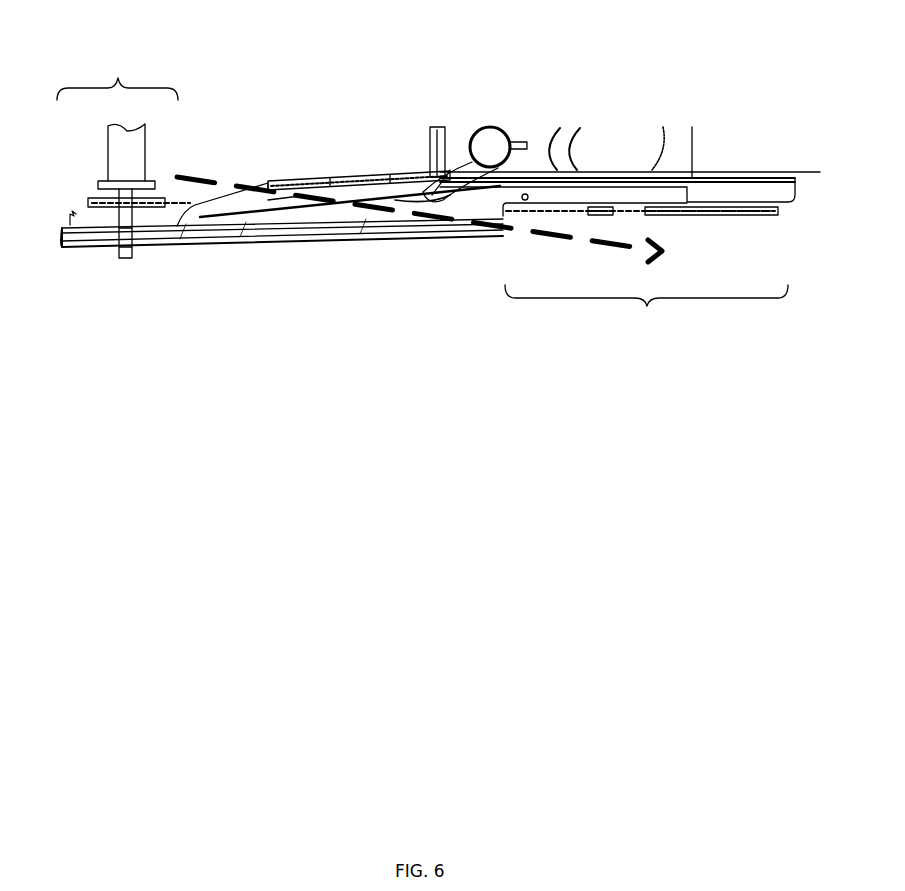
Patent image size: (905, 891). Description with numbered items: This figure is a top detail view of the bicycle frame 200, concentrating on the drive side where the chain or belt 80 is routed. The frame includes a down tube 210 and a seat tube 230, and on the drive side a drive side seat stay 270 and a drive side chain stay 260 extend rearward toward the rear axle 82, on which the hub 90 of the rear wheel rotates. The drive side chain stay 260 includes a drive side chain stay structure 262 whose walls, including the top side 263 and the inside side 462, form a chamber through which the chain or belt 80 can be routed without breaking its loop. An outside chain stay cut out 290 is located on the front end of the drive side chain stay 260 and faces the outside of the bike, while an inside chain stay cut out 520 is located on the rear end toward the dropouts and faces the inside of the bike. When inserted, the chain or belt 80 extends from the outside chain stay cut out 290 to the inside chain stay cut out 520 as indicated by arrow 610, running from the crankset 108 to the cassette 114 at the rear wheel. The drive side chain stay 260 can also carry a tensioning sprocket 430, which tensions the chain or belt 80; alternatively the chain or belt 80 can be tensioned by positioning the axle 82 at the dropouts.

The inside chain stay cut out 520 is at (118, 78).
The hub 90 is at (125, 152).
The cassette 114 is at (97, 197).
The axle 82 is at (128, 252).
The chain or belt 80 is at (172, 202).
The drive side chain stay structure 262 is at (270, 277).
The drive side chain stay 260 is at (347, 233).
The top side 263 is at (362, 241).
The drive side seat stay 270 is at (288, 243).
The inside side 462 is at (322, 178).
The down tube 210 is at (725, 142).
The seat tube 230 is at (598, 140).
The bicycle frame 200 is at (548, 82).
The arrow 610 is at (638, 250).
The outside chain stay cut out 290 is at (647, 306).
The tensioning sprocket 430 is at (603, 215).
The crankset 108 is at (718, 215).